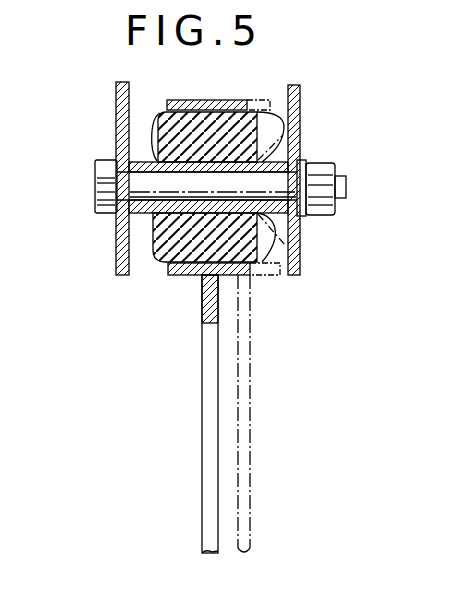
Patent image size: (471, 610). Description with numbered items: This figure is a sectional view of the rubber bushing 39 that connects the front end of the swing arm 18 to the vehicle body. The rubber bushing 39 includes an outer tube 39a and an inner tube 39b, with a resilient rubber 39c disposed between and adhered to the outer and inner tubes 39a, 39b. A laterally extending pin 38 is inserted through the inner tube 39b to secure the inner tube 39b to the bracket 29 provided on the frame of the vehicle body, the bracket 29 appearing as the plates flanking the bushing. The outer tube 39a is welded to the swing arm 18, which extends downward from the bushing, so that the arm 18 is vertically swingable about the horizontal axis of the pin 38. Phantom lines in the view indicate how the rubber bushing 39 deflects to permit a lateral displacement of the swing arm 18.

The swing arm 18 is at (202, 369).
The bracket 29 is at (300, 102).
The pin 38 is at (95, 185).
The rubber bushing 39 is at (158, 99).
The outer tube 39a is at (187, 100).
The inner tube 39b is at (117, 228).
The resilient rubber 39c is at (158, 262).